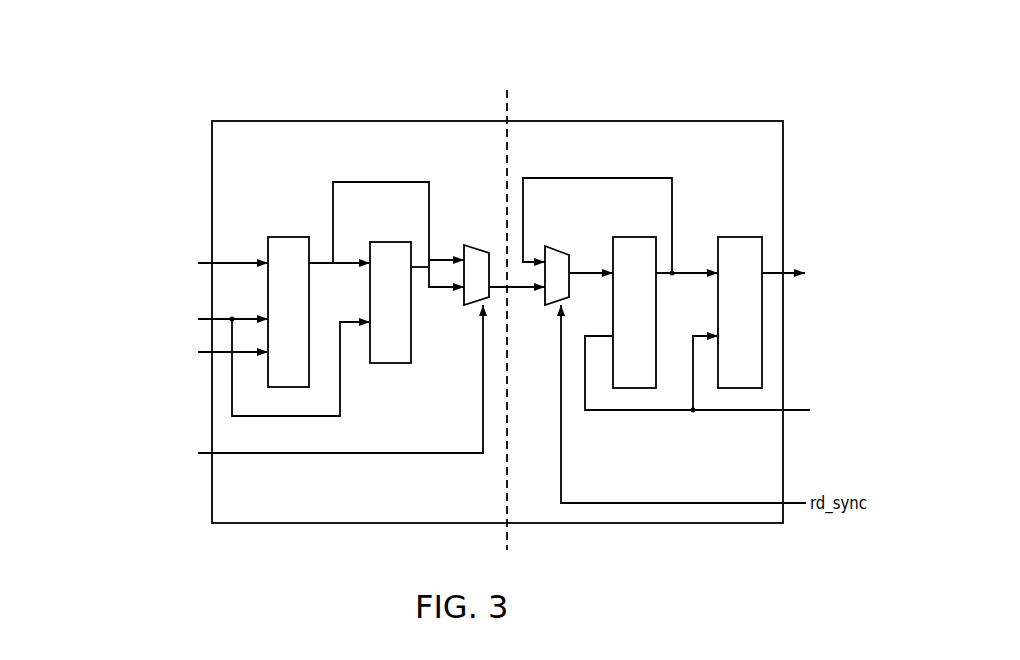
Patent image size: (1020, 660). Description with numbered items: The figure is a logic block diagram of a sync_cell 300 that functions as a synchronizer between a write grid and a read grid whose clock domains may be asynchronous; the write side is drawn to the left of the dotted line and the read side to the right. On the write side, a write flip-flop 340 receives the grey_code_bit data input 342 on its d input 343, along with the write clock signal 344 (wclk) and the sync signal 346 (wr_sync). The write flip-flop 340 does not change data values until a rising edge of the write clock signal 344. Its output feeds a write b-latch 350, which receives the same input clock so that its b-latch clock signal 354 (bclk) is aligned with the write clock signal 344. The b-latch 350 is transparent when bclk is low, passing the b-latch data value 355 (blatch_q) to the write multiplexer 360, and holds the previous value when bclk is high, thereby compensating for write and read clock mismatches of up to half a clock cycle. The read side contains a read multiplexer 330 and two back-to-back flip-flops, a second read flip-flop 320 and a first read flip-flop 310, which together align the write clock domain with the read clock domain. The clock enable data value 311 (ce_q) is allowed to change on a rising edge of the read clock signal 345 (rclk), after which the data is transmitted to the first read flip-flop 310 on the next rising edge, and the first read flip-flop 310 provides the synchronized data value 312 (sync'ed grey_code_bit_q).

The sync_cell 300 is at (283, 74).
The first read flip-flop 310 is at (738, 237).
The clock enable data value 311 is at (688, 271).
The synchronized data value 312 is at (851, 247).
The second read flip-flop 320 is at (633, 237).
The read multiplexer 330 is at (558, 247).
The write flip-flop 340 is at (286, 237).
The data input 342 is at (80, 262).
The input 343 is at (268, 262).
The write clock signal 344 is at (156, 319).
The read clock signal 345 is at (845, 411).
The sync signal 346 is at (131, 352).
The write b-latch 350 is at (393, 242).
The b-latch clock signal 354 is at (343, 326).
The b-latch data value 355 is at (348, 262).
The write multiplexer 360 is at (478, 245).